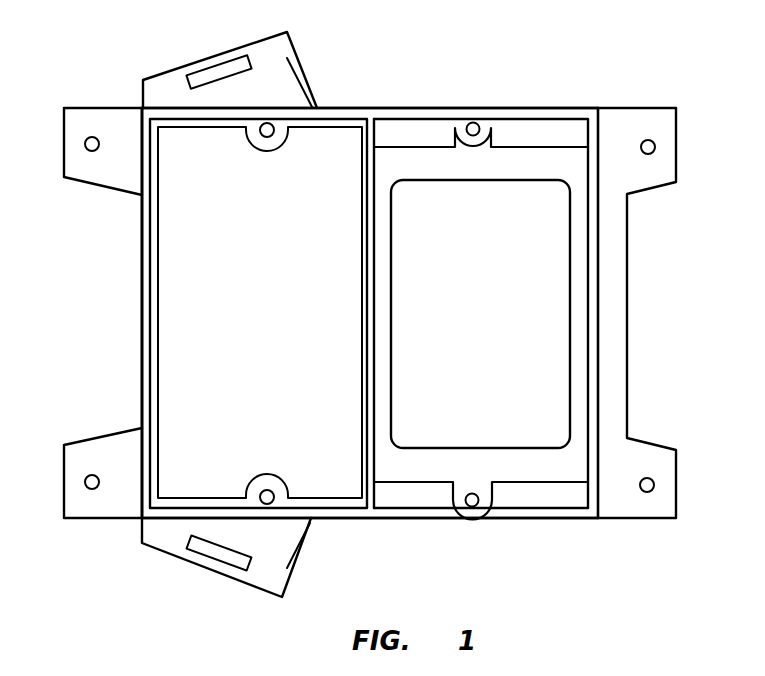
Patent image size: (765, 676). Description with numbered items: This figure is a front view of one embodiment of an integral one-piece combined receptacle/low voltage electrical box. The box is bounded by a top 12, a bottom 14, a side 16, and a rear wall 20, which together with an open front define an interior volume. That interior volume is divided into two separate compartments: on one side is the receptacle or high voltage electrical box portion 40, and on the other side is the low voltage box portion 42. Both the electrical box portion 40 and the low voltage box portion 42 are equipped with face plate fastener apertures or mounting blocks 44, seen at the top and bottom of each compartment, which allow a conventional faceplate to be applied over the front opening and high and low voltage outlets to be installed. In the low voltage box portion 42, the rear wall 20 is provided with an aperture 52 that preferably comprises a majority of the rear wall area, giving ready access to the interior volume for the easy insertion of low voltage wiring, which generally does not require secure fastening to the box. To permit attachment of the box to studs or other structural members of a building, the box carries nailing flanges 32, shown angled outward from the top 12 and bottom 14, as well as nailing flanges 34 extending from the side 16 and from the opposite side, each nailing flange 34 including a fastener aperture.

The top 12 is at (388, 114).
The bottom 14 is at (417, 515).
The side 16 is at (150, 298).
The rear wall 20 is at (287, 327).
The nailing flange 32 is at (273, 45).
The nailing flange 34 is at (95, 174).
The electrical box portion 40 is at (200, 353).
The low voltage box portion 42 is at (573, 317).
The face plate fastener aperture 44 is at (262, 138).
The aperture 52 is at (476, 292).